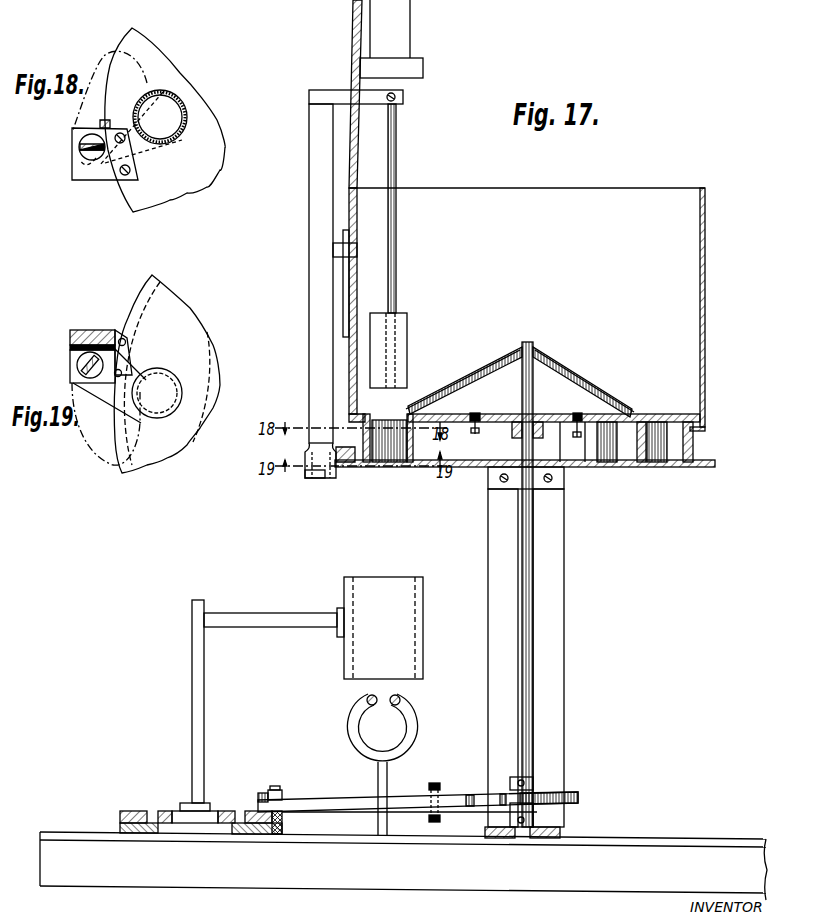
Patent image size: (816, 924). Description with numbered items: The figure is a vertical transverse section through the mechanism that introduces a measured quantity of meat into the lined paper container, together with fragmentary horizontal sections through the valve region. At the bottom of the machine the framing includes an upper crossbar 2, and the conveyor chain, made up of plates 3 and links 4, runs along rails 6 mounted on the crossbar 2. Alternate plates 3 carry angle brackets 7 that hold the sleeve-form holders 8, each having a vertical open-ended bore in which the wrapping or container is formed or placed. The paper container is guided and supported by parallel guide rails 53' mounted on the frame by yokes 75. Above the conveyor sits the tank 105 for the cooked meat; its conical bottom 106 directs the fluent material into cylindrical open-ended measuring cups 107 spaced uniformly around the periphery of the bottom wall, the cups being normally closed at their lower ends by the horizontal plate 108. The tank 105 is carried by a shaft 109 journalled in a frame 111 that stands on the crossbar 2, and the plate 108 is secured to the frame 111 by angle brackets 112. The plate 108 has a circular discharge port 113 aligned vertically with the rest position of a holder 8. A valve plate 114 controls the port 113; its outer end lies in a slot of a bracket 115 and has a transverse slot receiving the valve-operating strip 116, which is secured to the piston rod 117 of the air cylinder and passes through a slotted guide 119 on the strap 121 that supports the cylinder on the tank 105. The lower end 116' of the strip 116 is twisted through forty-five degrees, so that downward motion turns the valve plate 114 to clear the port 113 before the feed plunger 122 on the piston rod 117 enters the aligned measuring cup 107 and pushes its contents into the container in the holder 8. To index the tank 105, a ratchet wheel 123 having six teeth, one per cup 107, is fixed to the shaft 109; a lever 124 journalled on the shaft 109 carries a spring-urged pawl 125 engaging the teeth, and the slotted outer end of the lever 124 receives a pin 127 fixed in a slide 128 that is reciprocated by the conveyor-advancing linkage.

In FIG. 17, the upper crossbar 2 is at (257, 884).
In FIG. 17, the plate 3 is at (212, 812).
In FIG. 17, the link 4 is at (230, 812).
In FIG. 17, the rail 6 is at (120, 828).
In FIG. 17, the angle bracket 7 is at (233, 627).
In FIG. 17, the holder 8 is at (423, 616).
In FIG. 17, the guide rail 53' is at (383, 730).
In FIG. 17, the yoke 75 is at (417, 727).
In FIG. 17, the tank 105 is at (705, 346).
In FIG. 17, the conical bottom 106 is at (592, 398).
In FIG. 17, the measuring cup 107 is at (680, 446).
In FIG. 18, the measuring cup 107 is at (178, 128).
In FIG. 17, the plate 108 is at (668, 468).
In FIG. 18, the plate 108 is at (178, 190).
In FIG. 19, the plate 108 is at (135, 294).
In FIG. 17, the shaft 109 is at (533, 655).
In FIG. 17, the frame 111 is at (553, 576).
In FIG. 17, the angle bracket 112 is at (488, 483).
In FIG. 17, the discharge port 113 is at (411, 463).
In FIG. 17, the valve plate 114 is at (388, 462).
In FIG. 18, the valve plate 114 is at (100, 124).
In FIG. 19, the valve plate 114 is at (138, 366).
In FIG. 17, the bracket 115 is at (338, 470).
In FIG. 18, the bracket 115 is at (76, 181).
In FIG. 19, the bracket 115 is at (70, 337).
In FIG. 17, the valve-operating strip 116 is at (304, 291).
In FIG. 19, the valve-operating strip 116 is at (67, 365).
In FIG. 17, the lower end of valve operating strip 116' is at (316, 494).
In FIG. 18, the lower end of valve operating strip 116' is at (68, 149).
In FIG. 17, the piston rod 117 is at (396, 160).
In FIG. 17, the slotted guide 119 is at (334, 248).
In FIG. 17, the strap 121 is at (360, 67).
In FIG. 17, the feed plunger 122 is at (407, 373).
In FIG. 17, the ratchet wheel 123 is at (576, 792).
In FIG. 17, the lever 124 is at (325, 801).
In FIG. 17, the pawl 125 is at (418, 790).
In FIG. 17, the pin 127 is at (280, 792).
In FIG. 17, the slide 128 is at (283, 828).